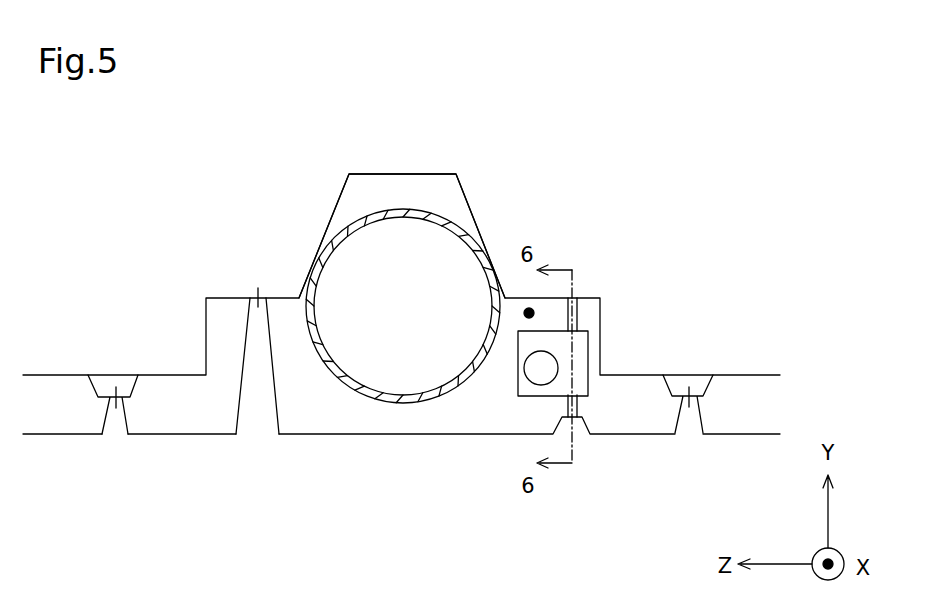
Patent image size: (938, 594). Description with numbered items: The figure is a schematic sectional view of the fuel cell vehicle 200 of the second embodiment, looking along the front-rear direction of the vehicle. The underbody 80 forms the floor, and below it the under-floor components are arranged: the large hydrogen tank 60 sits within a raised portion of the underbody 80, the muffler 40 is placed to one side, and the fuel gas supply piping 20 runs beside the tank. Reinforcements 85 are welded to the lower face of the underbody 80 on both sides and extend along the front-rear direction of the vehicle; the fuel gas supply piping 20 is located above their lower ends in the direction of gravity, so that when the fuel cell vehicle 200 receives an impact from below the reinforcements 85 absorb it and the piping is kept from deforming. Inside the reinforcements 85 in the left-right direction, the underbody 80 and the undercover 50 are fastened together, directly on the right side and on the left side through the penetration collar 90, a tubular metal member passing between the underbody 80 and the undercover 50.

The fuel cell vehicle 200 is at (678, 197).
The underbody 80 is at (398, 173).
The hydrogen tank 60 is at (432, 213).
The fuel gas supply piping 20 is at (524, 310).
The penetration collar 90 is at (578, 310).
The muffler 40 is at (578, 352).
The reinforcements 85 is at (135, 387).
The undercover 50 is at (733, 435).